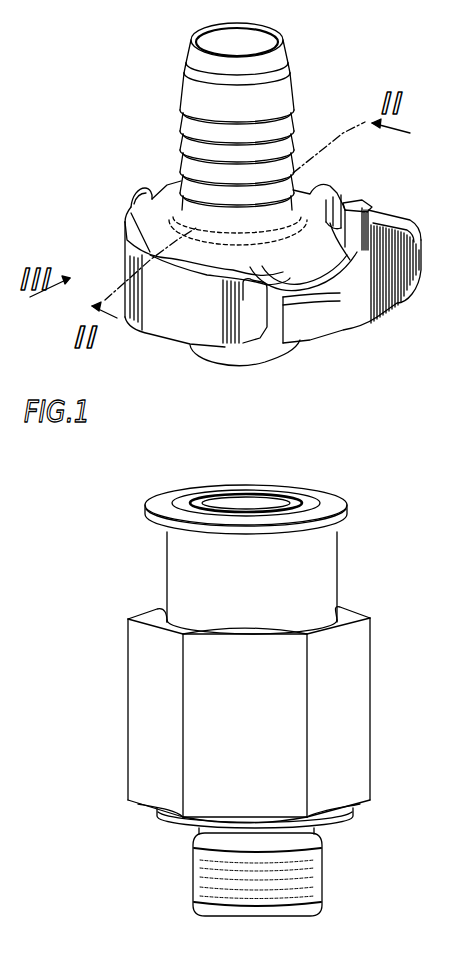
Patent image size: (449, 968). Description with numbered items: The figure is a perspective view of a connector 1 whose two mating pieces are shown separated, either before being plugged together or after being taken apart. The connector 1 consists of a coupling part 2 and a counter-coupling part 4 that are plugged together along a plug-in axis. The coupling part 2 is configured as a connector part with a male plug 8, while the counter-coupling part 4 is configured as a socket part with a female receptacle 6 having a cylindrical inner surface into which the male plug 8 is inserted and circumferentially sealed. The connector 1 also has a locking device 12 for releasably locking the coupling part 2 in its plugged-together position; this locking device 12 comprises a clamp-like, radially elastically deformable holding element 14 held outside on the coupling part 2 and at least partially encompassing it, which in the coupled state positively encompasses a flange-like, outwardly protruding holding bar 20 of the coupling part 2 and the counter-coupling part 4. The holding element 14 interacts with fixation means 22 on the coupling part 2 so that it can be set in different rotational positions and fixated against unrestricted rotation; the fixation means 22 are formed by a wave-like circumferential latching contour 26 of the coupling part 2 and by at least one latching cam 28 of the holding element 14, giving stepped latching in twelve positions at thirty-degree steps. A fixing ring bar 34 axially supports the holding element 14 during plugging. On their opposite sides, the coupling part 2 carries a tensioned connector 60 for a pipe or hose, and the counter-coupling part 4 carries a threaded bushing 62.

The connector 1 is at (125, 164).
The coupling part 2 is at (173, 347).
The counter-coupling part 4 is at (378, 593).
The female receptacle 6 is at (259, 507).
The male plug 8 is at (210, 353).
The locking device 12 is at (110, 263).
The holding element 14 is at (148, 326).
The holding bar 20 is at (347, 520).
The fixation means 22 is at (124, 209).
The latching contour 26 is at (312, 181).
The latching cam 28 is at (142, 190).
The fixing ring bar 34 is at (343, 197).
The tensioned connector 60 is at (285, 118).
The threaded bushing 62 is at (300, 878).